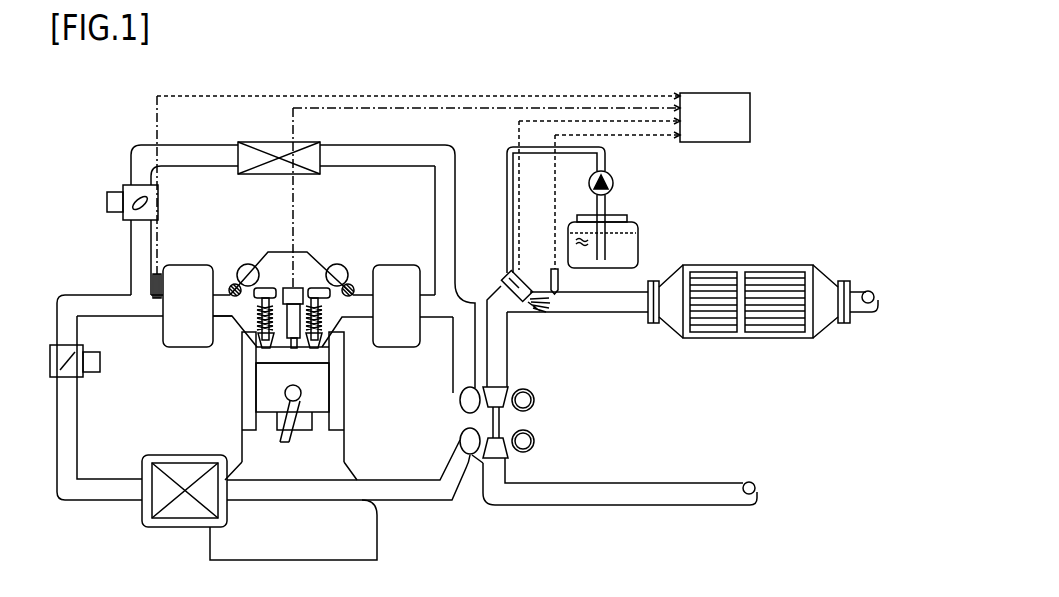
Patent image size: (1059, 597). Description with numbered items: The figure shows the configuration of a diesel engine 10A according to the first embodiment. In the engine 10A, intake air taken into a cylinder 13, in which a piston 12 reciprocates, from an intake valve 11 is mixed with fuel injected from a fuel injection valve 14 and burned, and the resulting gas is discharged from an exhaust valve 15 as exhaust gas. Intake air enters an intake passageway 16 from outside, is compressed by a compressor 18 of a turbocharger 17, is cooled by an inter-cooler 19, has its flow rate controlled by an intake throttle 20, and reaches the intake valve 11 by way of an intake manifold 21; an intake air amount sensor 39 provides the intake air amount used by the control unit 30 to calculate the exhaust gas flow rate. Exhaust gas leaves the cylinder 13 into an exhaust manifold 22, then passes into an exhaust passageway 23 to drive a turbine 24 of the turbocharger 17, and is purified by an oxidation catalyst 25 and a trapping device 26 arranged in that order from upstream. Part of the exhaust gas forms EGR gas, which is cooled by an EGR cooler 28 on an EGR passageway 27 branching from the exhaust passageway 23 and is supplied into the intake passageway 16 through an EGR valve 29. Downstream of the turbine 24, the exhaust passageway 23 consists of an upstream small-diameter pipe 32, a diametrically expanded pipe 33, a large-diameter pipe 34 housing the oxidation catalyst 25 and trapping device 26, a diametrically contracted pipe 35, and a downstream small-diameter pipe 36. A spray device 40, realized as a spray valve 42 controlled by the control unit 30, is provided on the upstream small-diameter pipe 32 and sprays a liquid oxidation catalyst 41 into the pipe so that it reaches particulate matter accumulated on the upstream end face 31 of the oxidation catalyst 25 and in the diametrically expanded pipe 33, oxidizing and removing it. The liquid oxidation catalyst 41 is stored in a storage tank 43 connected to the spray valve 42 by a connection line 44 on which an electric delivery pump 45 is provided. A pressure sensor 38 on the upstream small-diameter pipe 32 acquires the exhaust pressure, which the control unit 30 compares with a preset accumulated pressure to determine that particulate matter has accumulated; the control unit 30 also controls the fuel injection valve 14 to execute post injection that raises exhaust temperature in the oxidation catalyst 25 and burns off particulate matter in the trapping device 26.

The engine 10A is at (78, 85).
The intake valve 11 is at (247, 263).
The piston 12 is at (345, 390).
The cylinder 13 is at (247, 356).
The fuel injection valve 14 is at (301, 287).
The exhaust valve 15 is at (323, 289).
The intake passageway 16 is at (556, 506).
The turbocharger 17 is at (498, 372).
The compressor 18 is at (458, 441).
The inter-cooler 19 is at (140, 514).
The intake throttle 20 is at (85, 374).
The intake manifold 21 is at (190, 265).
The exhaust manifold 22 is at (394, 265).
The exhaust passageway 23 is at (462, 290).
The turbine 24 is at (456, 400).
The oxidation catalyst 25 is at (716, 271).
The trapping device 26 is at (779, 271).
The EGR passageway 27 is at (362, 145).
The EGR cooler 28 is at (268, 142).
The EGR valve 29 is at (124, 184).
The control unit 30 is at (750, 120).
The upstream end face 31 is at (763, 299).
The upstream small-diameter pipe 32 is at (603, 313).
The diametrically expanded pipe 33 is at (676, 327).
The large-diameter pipe 34 is at (740, 340).
The diametrically contracted pipe 35 is at (829, 328).
The downstream small-diameter pipe 36 is at (863, 322).
The pressure sensor 38 is at (557, 313).
The intake air amount sensor 39 is at (154, 300).
The spray device 40 is at (504, 159).
The liquid oxidation catalyst 41 is at (540, 313).
The spray valve 42 is at (523, 273).
The storage tank 43 is at (630, 221).
The connection line 44 is at (539, 147).
The delivery pump 45 is at (604, 171).